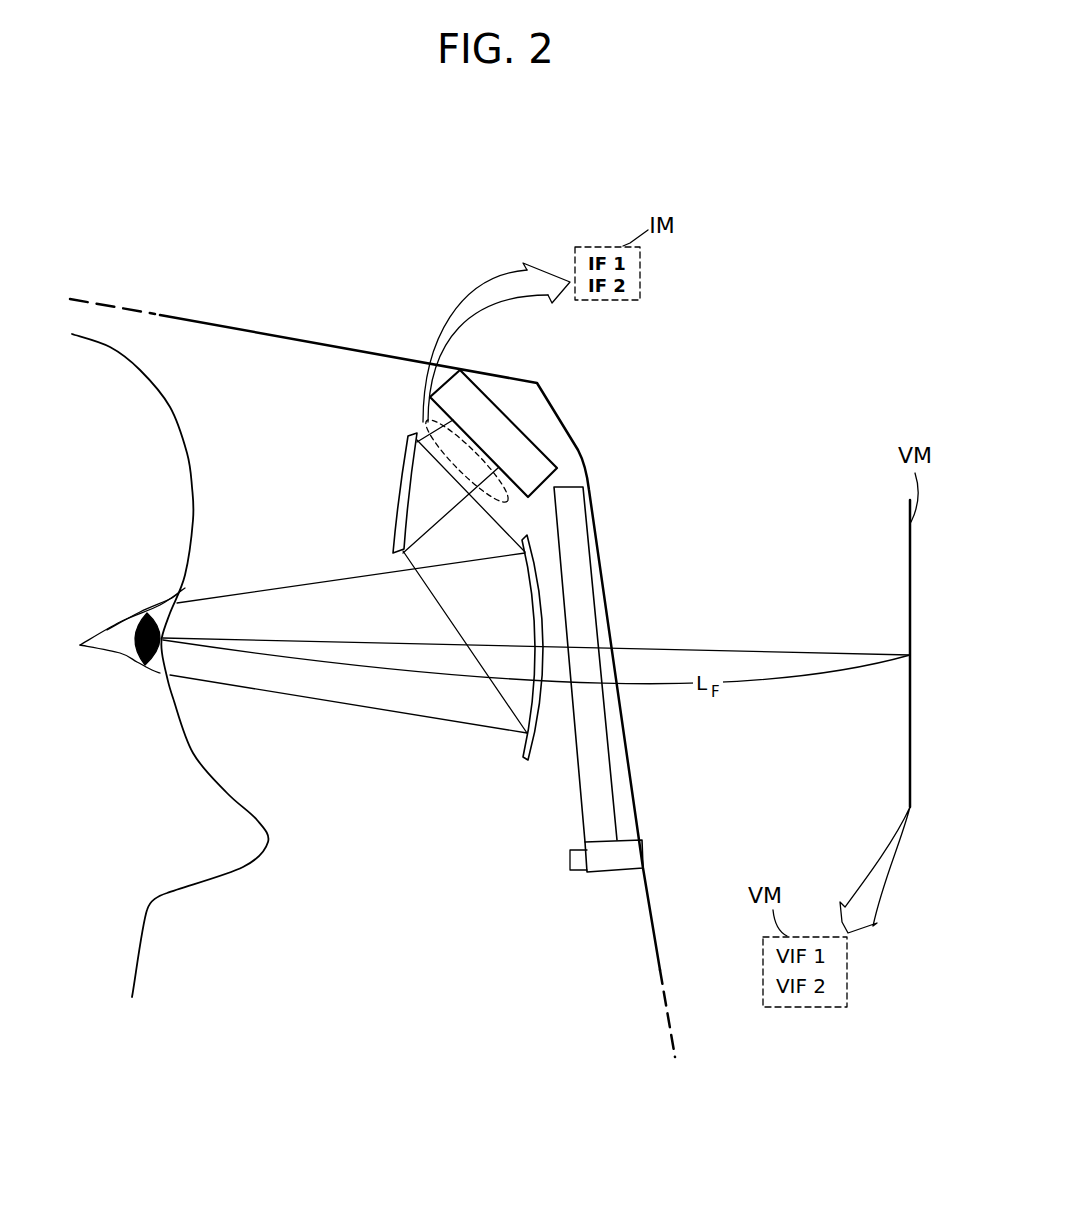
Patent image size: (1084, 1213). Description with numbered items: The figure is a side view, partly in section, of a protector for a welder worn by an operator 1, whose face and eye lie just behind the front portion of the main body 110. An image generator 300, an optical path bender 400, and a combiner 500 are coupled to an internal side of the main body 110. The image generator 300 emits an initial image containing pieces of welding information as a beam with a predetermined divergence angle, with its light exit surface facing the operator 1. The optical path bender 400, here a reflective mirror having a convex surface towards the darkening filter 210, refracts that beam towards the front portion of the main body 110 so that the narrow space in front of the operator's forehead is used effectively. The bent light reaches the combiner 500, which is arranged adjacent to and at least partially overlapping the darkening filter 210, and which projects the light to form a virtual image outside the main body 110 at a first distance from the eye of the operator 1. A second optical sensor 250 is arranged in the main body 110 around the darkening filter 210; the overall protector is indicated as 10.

The operator 1 is at (108, 345).
The head-mounted display device 10 is at (468, 642).
The main body 110 is at (297, 336).
The darkening filter 210 is at (580, 590).
The second optical sensor 250 is at (578, 863).
The image generator 300 is at (520, 428).
The optical path bender 400 is at (405, 496).
The combiner 500 is at (523, 753).